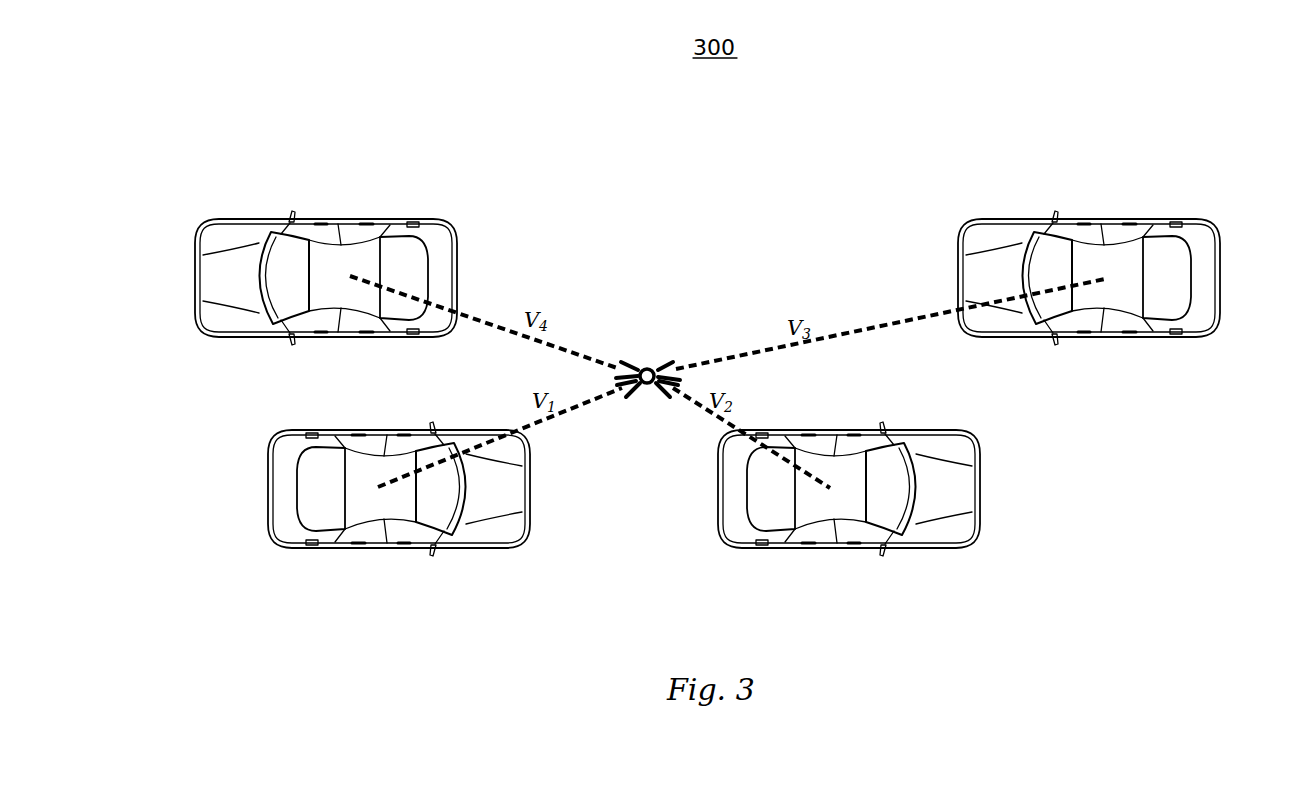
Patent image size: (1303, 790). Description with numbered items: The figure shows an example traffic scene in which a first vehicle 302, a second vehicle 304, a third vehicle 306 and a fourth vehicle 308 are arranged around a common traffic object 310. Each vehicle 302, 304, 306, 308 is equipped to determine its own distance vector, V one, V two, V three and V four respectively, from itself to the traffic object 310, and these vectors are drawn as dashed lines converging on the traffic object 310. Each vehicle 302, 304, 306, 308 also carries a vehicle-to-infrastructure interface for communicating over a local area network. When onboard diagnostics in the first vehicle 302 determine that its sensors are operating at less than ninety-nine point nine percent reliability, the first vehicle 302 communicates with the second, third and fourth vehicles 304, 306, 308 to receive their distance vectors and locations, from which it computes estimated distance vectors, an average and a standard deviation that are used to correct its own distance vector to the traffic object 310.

The first vehicle 302 is at (263, 498).
The second vehicle 304 is at (713, 498).
The third vehicle 306 is at (1221, 272).
The fourth vehicle 308 is at (191, 272).
The traffic object 310 is at (648, 366).